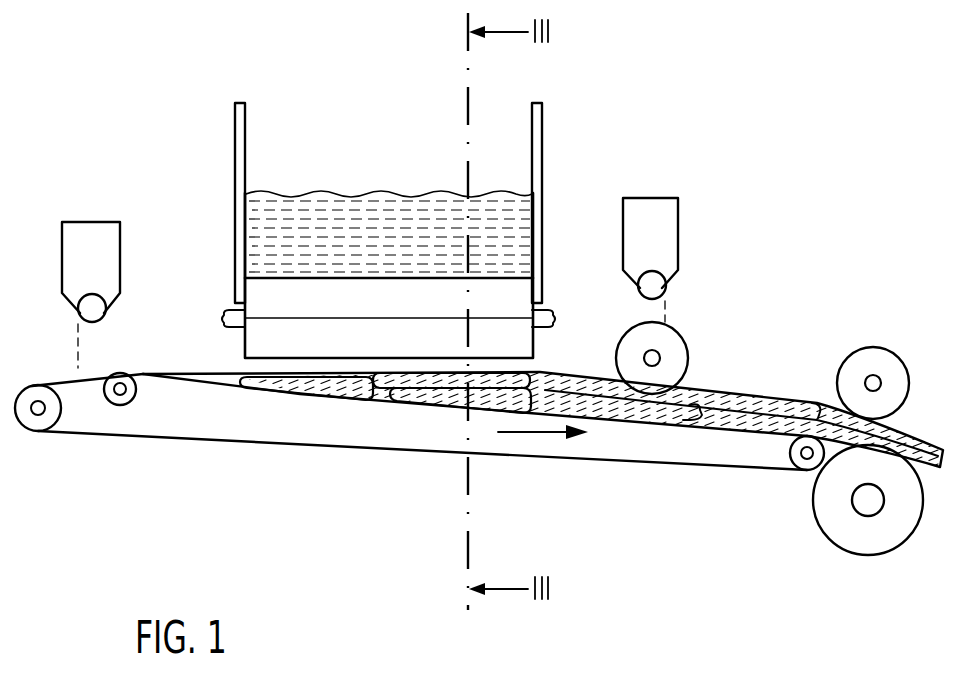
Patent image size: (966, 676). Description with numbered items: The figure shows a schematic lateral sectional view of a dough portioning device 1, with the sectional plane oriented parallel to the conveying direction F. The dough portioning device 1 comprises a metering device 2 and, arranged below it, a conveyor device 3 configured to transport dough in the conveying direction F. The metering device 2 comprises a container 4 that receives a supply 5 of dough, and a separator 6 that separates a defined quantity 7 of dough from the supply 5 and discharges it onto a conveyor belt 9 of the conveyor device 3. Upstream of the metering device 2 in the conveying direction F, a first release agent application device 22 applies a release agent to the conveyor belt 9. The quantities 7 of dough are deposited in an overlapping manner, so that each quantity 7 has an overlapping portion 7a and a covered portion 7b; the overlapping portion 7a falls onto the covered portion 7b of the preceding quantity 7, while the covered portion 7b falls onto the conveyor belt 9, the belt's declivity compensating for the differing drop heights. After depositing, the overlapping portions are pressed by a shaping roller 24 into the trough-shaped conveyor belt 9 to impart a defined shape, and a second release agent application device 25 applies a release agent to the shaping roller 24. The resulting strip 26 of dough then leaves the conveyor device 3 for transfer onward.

The dough portioning device 1 is at (778, 73).
The metering device 2 is at (368, 230).
The conveyor device 3 is at (469, 464).
The container 4 is at (543, 123).
The supply of dough 5 is at (278, 199).
The separator 6 is at (559, 297).
The quantity of dough 7 is at (543, 424).
The overlapping portion 7a is at (435, 397).
The covered portion 7b is at (287, 392).
The conveyor belt 9 is at (86, 437).
The first release agent application device 22 is at (72, 222).
The shaping roller 24 is at (672, 344).
The second release agent application device 25 is at (660, 198).
The strip of dough 26 is at (780, 400).
The conveying direction F is at (532, 438).